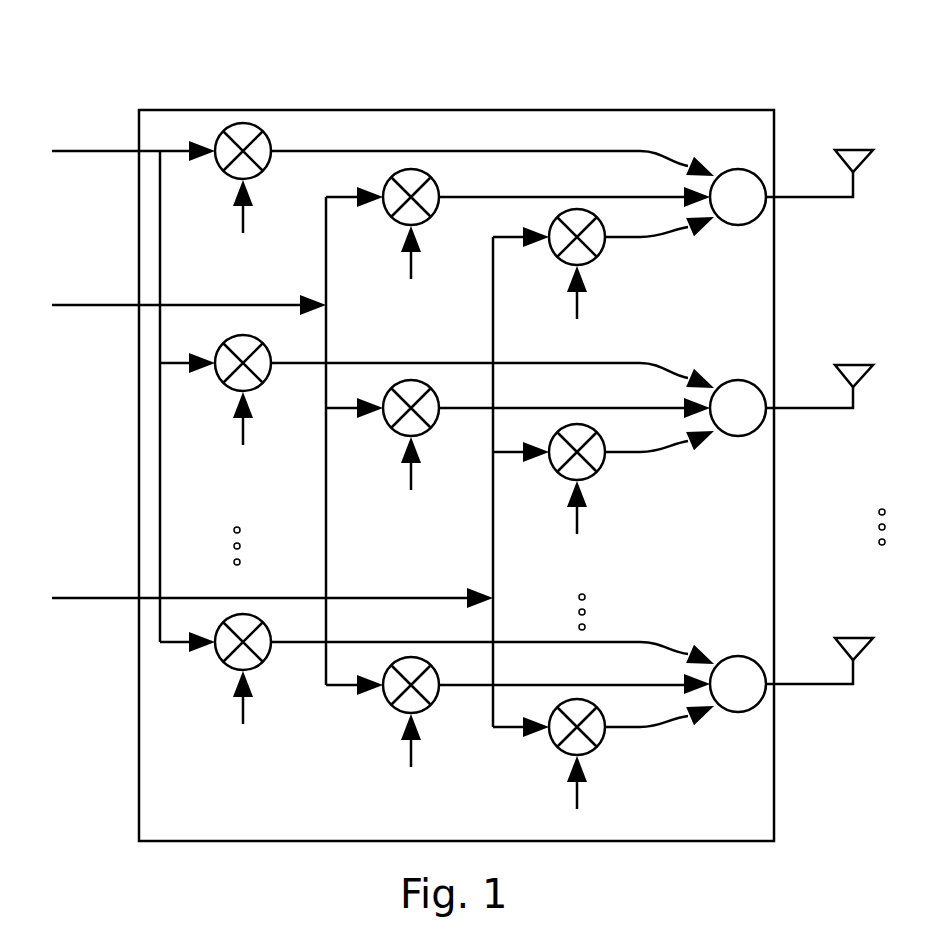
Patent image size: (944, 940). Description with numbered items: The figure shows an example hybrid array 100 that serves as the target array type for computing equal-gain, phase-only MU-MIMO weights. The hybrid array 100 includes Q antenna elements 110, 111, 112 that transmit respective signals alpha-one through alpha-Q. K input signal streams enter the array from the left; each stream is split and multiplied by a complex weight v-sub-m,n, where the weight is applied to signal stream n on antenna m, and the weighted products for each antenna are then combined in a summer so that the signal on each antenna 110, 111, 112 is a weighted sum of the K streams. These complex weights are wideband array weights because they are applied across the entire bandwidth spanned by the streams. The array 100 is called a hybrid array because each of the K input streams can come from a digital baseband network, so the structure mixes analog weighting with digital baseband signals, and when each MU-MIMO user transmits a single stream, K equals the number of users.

The hybrid array 100 is at (412, 100).
The antenna element 110 is at (856, 142).
The antenna element 111 is at (856, 360).
The antenna element 112 is at (856, 634).